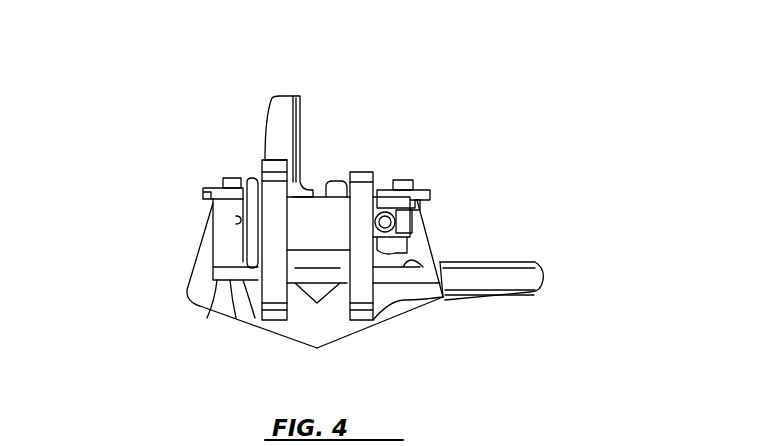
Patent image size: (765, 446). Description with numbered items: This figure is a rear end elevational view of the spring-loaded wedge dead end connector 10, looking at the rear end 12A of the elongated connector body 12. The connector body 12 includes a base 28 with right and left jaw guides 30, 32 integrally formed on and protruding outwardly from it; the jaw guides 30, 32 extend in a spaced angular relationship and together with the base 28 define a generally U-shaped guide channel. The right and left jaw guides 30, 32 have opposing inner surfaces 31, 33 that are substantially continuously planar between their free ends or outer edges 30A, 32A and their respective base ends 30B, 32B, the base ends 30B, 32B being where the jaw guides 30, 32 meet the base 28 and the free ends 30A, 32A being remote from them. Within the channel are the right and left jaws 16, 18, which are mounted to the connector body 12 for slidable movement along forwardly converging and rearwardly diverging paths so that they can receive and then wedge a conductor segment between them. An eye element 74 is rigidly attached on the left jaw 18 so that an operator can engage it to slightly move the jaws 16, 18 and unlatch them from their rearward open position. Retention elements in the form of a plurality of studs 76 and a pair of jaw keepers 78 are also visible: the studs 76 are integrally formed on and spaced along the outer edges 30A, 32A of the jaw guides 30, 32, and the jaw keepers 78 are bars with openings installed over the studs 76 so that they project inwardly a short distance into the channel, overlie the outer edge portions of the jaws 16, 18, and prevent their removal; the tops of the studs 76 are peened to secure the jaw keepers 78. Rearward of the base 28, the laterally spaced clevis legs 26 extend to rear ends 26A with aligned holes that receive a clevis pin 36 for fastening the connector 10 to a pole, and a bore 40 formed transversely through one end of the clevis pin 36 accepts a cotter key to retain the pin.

The spring-loaded wedge dead end connector 10 is at (505, 133).
The connector body 12 is at (192, 308).
The rear end 12A is at (407, 300).
The right jaw 16 is at (331, 183).
The left jaw 18 is at (310, 180).
The clevis legs 26 is at (264, 318).
The rear ends of clevis legs 26A is at (362, 248).
The base 28 is at (236, 303).
The right jaw guide 30 is at (413, 233).
The free end of right jaw guide 30A is at (390, 222).
The base end of right jaw guide 30B is at (446, 294).
The inner surface of right jaw guide 31 is at (436, 263).
The left jaw guide 32 is at (228, 230).
The free end of left jaw guide 32A is at (227, 209).
The base end of left jaw guide 32B is at (203, 312).
The inner surface of left jaw guide 33 is at (238, 221).
The clevis pin 36 is at (200, 291).
The bore 40 is at (416, 207).
The eye element 74 is at (280, 105).
The studs 76 is at (235, 180).
The jaw keepers 78 is at (207, 194).